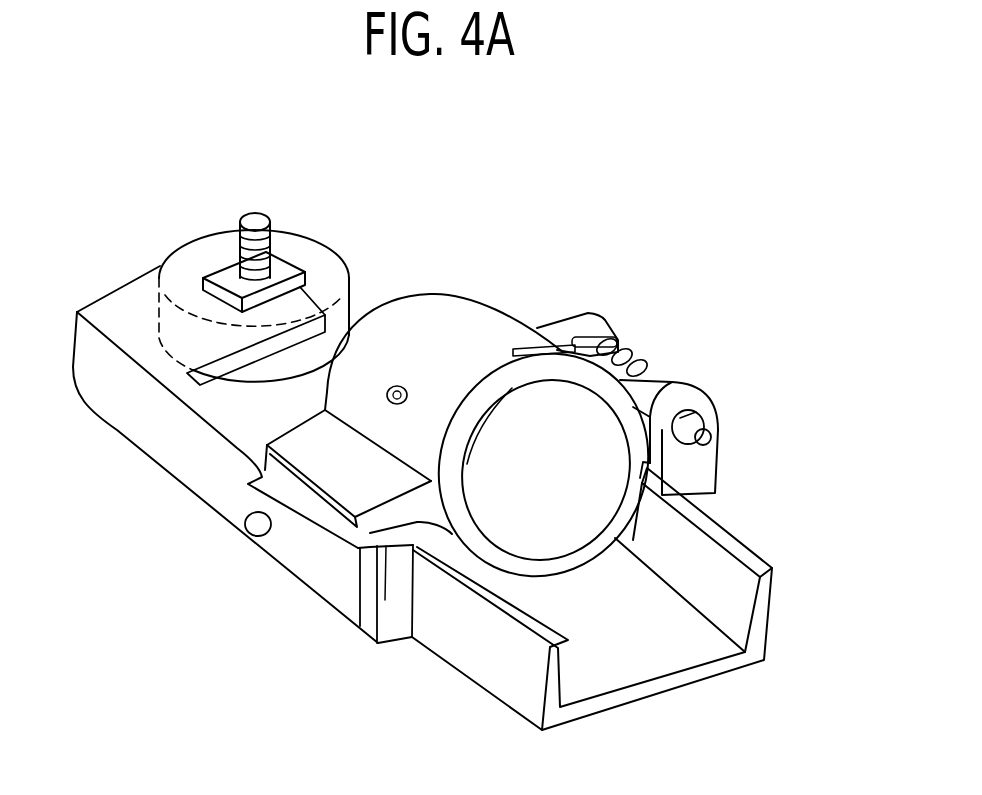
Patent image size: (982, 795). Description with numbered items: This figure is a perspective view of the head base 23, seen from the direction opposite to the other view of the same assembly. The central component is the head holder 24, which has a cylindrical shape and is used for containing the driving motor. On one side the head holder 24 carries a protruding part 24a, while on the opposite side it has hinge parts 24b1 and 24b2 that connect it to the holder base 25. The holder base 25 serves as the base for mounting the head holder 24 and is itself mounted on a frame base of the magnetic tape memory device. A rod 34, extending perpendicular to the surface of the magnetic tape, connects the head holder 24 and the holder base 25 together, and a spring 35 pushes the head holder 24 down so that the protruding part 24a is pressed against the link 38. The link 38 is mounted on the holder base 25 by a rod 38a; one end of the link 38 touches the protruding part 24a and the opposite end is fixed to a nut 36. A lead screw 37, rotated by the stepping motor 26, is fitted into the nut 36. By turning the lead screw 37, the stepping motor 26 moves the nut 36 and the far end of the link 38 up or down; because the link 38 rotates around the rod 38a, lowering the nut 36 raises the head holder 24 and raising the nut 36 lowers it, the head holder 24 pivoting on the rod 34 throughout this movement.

The head base 23 is at (573, 114).
The head holder 24 is at (432, 302).
The protruding part 24a is at (343, 488).
The hinge part 24b1 is at (680, 382).
The hinge part 24b2 is at (587, 322).
The holder base 25 is at (743, 557).
The stepping motor 26 is at (313, 238).
The rod 34 is at (718, 430).
The spring 35 is at (640, 360).
The nut 36 is at (278, 263).
The lead screw 37 is at (254, 212).
The link 38 is at (203, 460).
The rod 38a is at (248, 536).